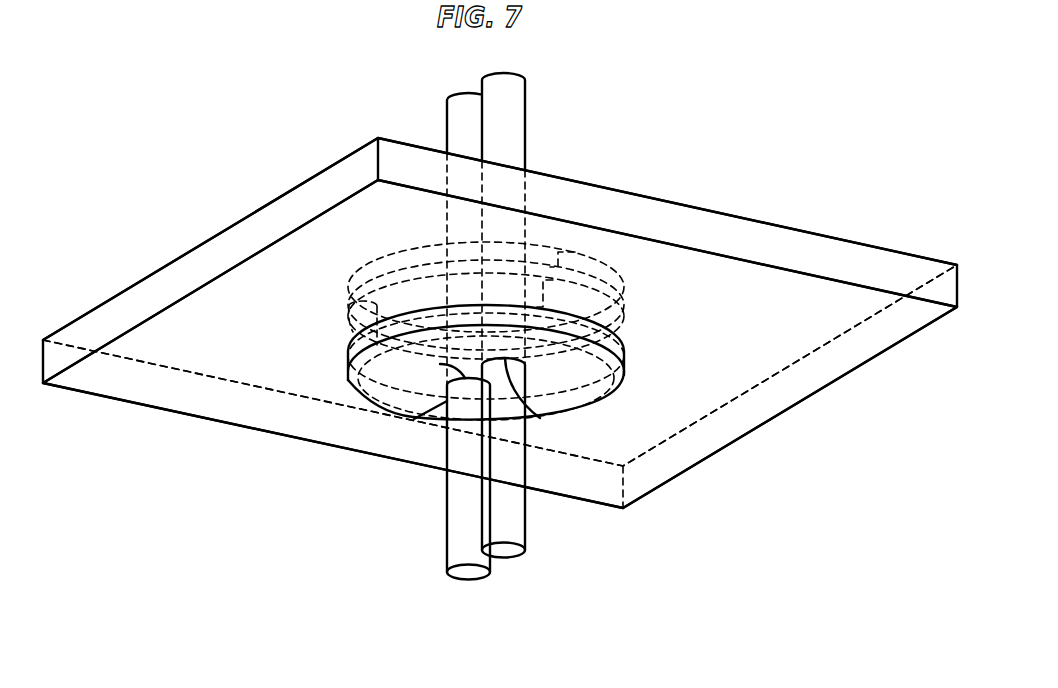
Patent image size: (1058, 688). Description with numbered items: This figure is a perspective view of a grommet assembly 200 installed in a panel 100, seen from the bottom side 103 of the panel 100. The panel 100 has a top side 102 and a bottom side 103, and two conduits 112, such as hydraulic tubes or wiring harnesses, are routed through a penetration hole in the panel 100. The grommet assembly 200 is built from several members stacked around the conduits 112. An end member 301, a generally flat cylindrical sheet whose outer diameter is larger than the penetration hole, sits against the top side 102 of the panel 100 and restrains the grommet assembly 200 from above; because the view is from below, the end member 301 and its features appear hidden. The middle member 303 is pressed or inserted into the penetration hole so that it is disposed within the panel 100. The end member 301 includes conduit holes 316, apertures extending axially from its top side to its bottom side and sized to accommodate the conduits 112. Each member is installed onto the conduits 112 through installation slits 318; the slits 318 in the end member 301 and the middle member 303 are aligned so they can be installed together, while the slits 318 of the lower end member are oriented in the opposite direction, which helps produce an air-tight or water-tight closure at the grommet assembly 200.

The panel 100 is at (782, 413).
The top side of panel 102 is at (819, 226).
The bottom side of panel 103 is at (858, 352).
The conduits 112 is at (457, 540).
The grommet assembly 200 is at (630, 396).
The end member 301 is at (420, 243).
The middle member 303 is at (347, 310).
The conduit holes 316 is at (440, 364).
The installation slits 318 is at (580, 255).